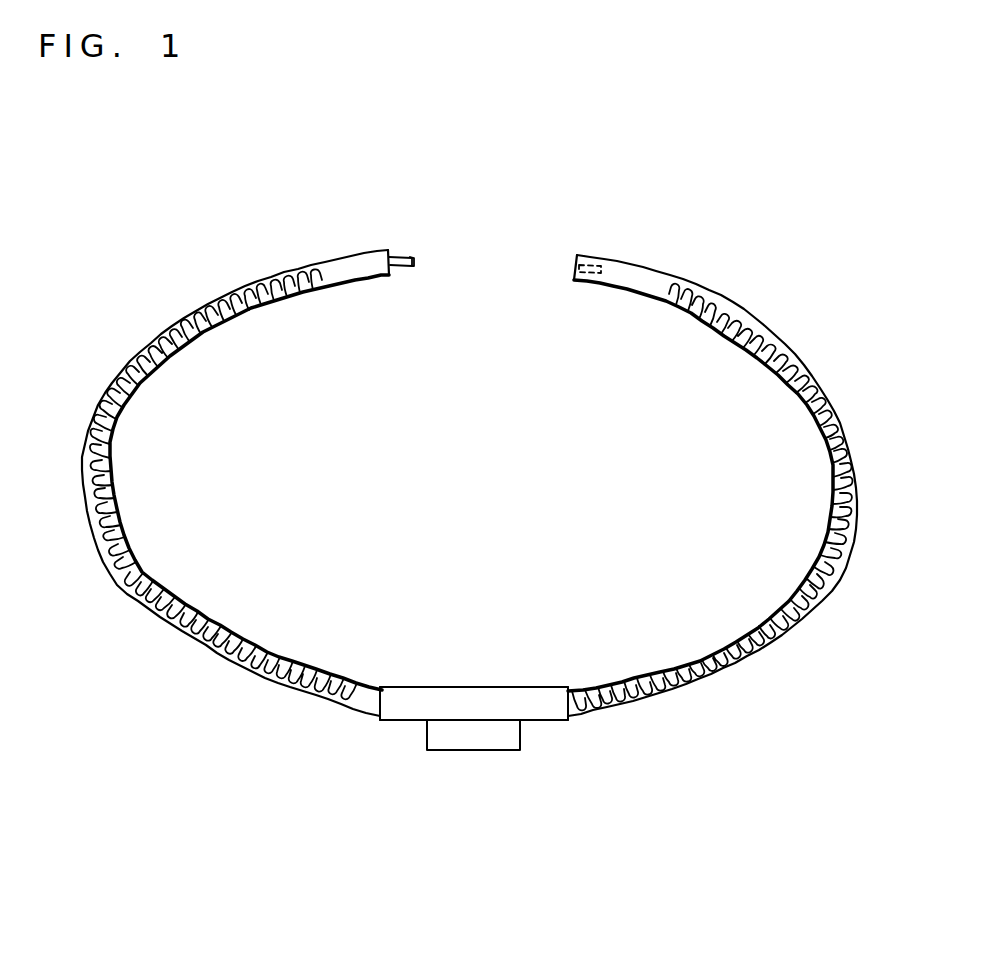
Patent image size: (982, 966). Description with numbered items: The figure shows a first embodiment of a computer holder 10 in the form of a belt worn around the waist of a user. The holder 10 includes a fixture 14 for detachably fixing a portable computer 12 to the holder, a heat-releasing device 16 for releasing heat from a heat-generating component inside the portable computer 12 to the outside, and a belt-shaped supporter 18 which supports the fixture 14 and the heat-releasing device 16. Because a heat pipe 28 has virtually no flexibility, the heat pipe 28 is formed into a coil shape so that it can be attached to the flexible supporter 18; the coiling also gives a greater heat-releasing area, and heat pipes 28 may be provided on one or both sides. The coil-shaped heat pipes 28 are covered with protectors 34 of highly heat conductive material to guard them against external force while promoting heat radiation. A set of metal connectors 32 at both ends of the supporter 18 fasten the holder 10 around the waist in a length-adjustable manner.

The computer holder 10 is at (475, 505).
The portable computer 12 is at (471, 742).
The fixture 14 is at (467, 700).
The heat-releasing device 16 is at (378, 716).
The supporter 18 is at (747, 627).
The heat pipe 28 is at (275, 657).
The metal connector 32 is at (574, 264).
The protector 34 is at (180, 620).